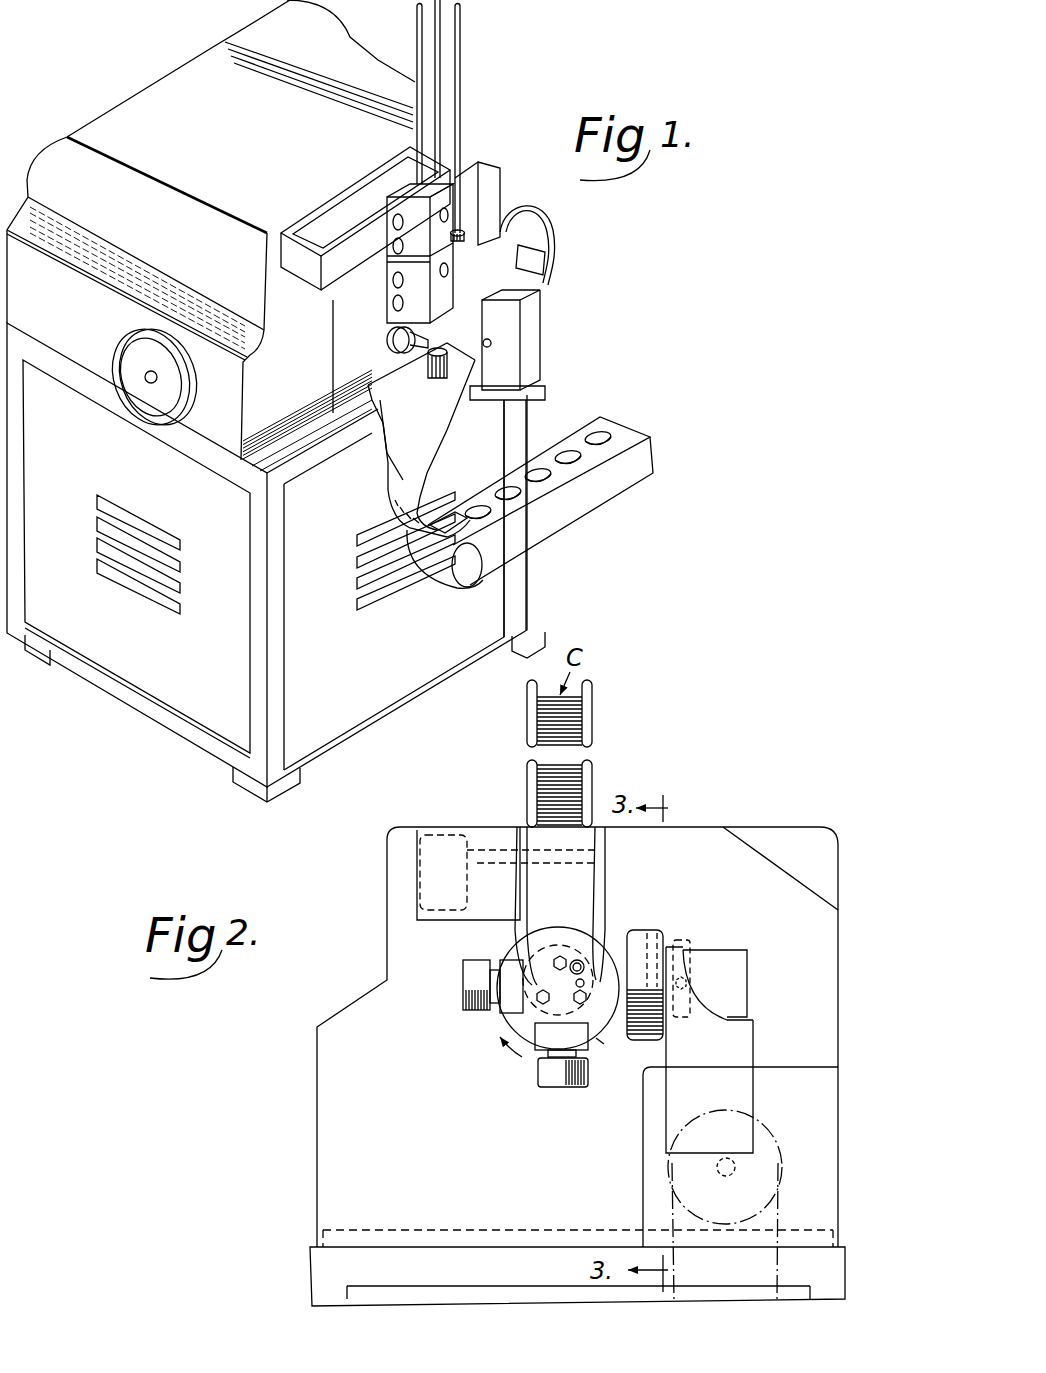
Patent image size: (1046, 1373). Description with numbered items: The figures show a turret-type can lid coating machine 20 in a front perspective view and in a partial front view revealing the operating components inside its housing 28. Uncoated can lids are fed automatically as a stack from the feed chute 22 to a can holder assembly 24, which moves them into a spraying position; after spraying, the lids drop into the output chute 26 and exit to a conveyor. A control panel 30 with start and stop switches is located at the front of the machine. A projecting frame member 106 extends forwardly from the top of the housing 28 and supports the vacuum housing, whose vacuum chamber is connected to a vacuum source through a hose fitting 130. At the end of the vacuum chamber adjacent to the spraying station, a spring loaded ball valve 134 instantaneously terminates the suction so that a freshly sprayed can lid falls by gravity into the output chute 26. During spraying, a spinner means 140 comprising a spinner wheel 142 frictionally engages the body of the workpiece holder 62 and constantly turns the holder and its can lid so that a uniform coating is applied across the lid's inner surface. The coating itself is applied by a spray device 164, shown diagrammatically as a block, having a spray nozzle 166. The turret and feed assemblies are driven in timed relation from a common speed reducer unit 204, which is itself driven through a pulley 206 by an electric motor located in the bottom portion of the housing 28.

In FIG. 1, the can lid coating machine 20 is at (128, 724).
In FIG. 2, the can lid coating machine 20 is at (296, 1020).
In FIG. 1, the feed chute 22 is at (465, 86).
In FIG. 2, the feed chute 22 is at (595, 722).
In FIG. 1, the can holder assembly 24 is at (422, 365).
In FIG. 2, the can holder assembly 24 is at (456, 958).
In FIG. 1, the output chute 26 is at (433, 488).
In FIG. 1, the housing 28 is at (612, 422).
In FIG. 2, the housing 28 is at (315, 1083).
In FIG. 1, the control panel 30 is at (447, 193).
In FIG. 2, the workpiece holder 62 is at (480, 1008).
In FIG. 1, the projecting frame member 106 is at (345, 292).
In FIG. 2, the projecting frame member 106 is at (412, 858).
In FIG. 1, the hose fitting 130 is at (505, 345).
In FIG. 2, the hose fitting 130 is at (561, 1036).
In FIG. 2, the spring loaded ball valve 134 is at (619, 1053).
In FIG. 2, the spinner means 140 is at (648, 917).
In FIG. 2, the spinner wheel 142 is at (657, 933).
In FIG. 2, the spray device 164 is at (740, 973).
In FIG. 2, the spray nozzle 166 is at (688, 942).
In FIG. 2, the speed reducer unit 204 is at (794, 1065).
In FIG. 2, the pulley 206 is at (778, 1176).